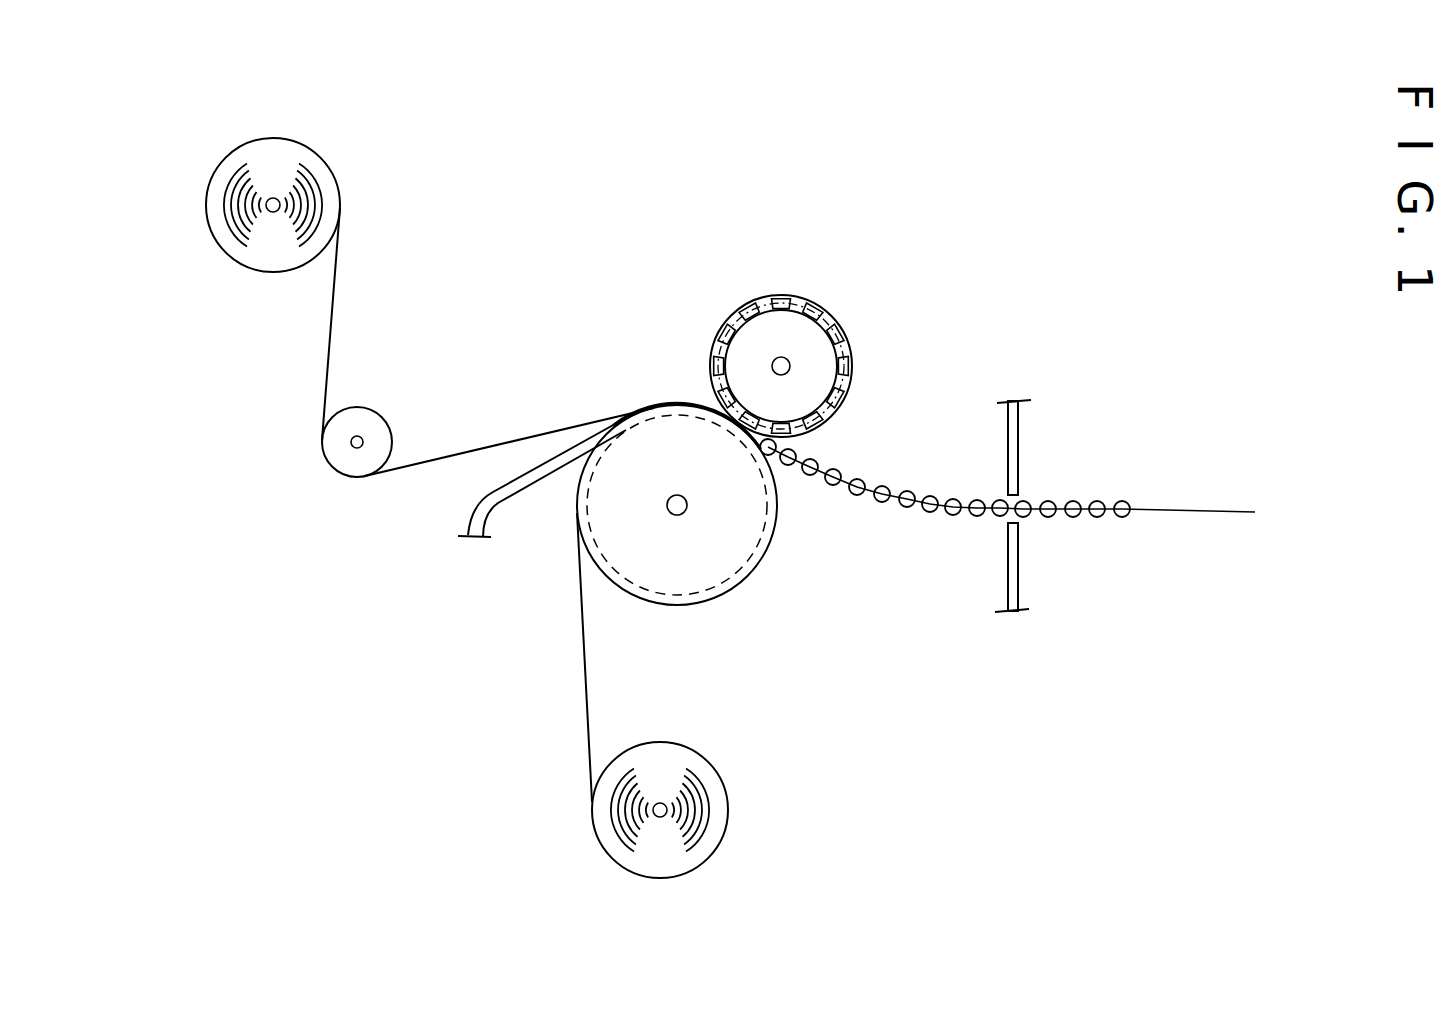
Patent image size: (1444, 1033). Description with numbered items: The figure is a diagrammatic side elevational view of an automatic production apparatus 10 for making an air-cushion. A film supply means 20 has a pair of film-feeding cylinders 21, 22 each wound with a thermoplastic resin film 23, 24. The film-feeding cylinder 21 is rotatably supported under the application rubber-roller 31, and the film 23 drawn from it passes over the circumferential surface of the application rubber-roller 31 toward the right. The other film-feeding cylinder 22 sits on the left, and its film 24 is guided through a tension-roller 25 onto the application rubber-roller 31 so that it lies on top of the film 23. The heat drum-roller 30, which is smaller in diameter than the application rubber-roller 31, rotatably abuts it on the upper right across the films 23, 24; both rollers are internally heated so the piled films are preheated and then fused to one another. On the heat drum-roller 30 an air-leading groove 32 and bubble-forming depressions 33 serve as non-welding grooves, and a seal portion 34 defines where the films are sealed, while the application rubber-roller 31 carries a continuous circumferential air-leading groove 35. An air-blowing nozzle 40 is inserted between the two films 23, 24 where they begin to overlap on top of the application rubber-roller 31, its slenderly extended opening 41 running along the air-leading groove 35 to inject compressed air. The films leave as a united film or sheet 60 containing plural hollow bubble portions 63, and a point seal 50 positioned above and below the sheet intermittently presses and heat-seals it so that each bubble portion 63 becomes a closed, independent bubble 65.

The automatic production apparatus 10 is at (721, 234).
The film supply means 20 is at (198, 146).
The film-feeding cylinder 21 is at (693, 850).
The film-feeding cylinder 22 is at (259, 255).
The thermoplastic resin film 23 is at (580, 705).
The thermoplastic resin film 24 is at (335, 310).
The tension-roller 25 is at (378, 415).
The heat drum-roller 30 is at (827, 318).
The application rubber-roller 31 is at (709, 508).
The air-leading groove 32 is at (845, 333).
The bubble-forming depressions 33 is at (850, 348).
The seal portion 34 is at (852, 366).
The air-leading groove 35 is at (693, 603).
The air-blowing nozzle 40 is at (528, 492).
The slenderly extended opening 41 is at (688, 405).
The point seal 50 is at (1025, 454).
The united film 60 is at (1007, 538).
The hollow bubble portions 63 is at (928, 518).
The independent bubble 65 is at (1097, 520).